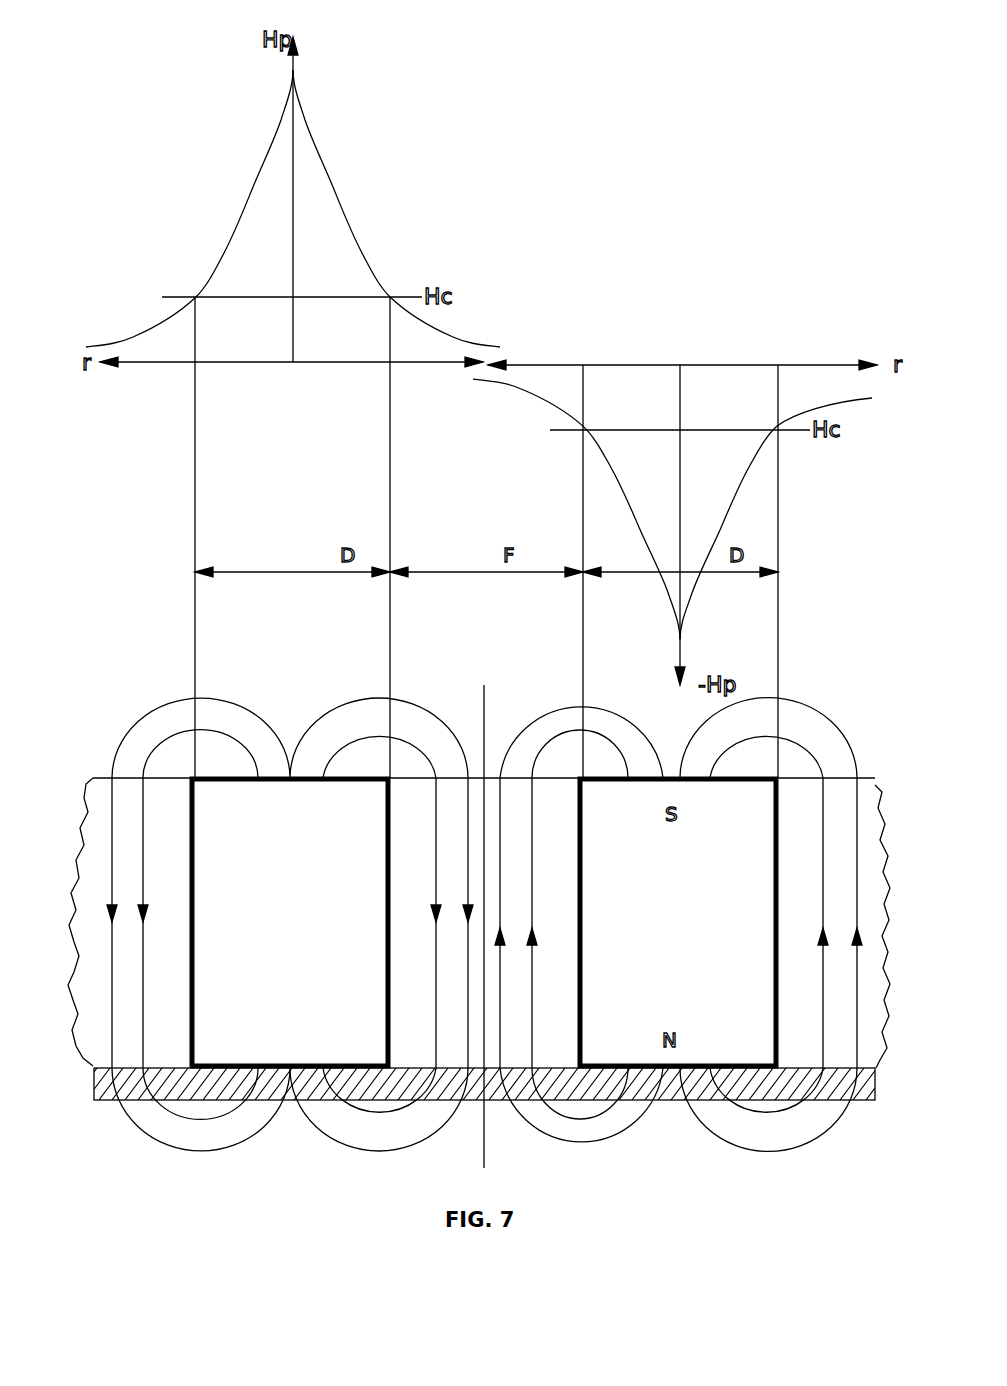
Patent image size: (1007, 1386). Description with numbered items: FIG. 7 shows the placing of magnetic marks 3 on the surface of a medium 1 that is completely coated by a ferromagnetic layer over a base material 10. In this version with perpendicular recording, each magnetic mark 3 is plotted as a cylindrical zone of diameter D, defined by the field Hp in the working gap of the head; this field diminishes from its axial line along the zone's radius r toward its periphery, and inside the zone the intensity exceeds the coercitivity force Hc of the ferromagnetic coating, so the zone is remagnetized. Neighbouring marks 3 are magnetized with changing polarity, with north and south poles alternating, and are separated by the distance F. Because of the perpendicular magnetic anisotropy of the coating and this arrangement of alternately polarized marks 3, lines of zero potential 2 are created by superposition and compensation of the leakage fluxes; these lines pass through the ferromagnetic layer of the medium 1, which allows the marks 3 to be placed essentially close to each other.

The medium 1 is at (93, 972).
The lines of zero potential 2 is at (484, 713).
The magnetic marks 3 is at (240, 972).
The base material 10 is at (175, 1087).